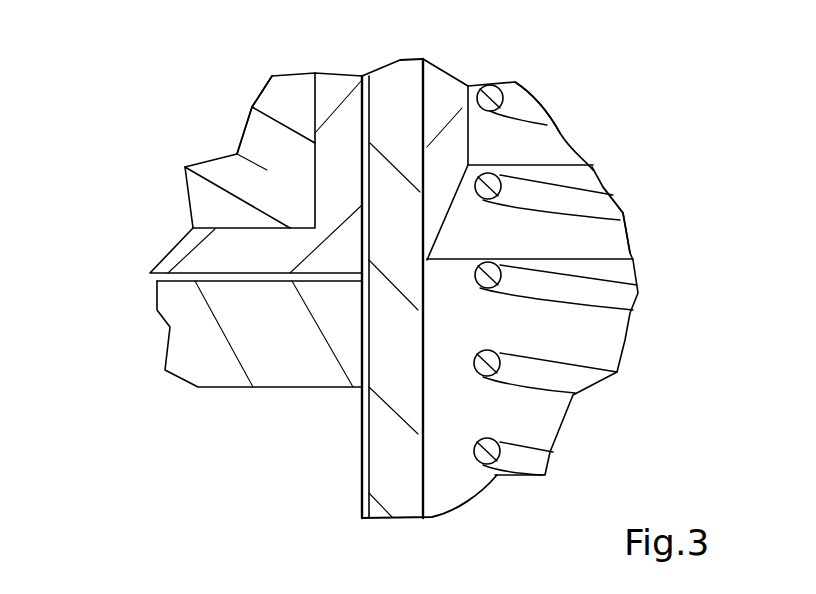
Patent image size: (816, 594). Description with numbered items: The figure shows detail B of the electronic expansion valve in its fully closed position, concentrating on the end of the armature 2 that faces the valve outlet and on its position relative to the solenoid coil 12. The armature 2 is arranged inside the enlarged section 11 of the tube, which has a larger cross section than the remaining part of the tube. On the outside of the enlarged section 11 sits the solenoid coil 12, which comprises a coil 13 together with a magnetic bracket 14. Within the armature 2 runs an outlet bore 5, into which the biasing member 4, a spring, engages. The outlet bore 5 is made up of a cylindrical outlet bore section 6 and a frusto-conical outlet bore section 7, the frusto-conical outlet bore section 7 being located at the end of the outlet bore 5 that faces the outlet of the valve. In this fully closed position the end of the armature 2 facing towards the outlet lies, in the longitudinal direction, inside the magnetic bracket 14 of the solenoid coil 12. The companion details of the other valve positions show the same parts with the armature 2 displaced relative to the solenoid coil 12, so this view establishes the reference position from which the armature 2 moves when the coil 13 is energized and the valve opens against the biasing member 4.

The armature 2 is at (443, 98).
The biasing member 4 is at (489, 96).
The outlet bore 5 is at (583, 177).
The cylindrical outlet bore section 6 is at (533, 152).
The frusto-conical outlet bore section 7 is at (597, 242).
The enlarged section 11 is at (387, 448).
The solenoid coil 12 is at (213, 202).
The coil 13 is at (237, 155).
The magnetic bracket 14 is at (272, 332).